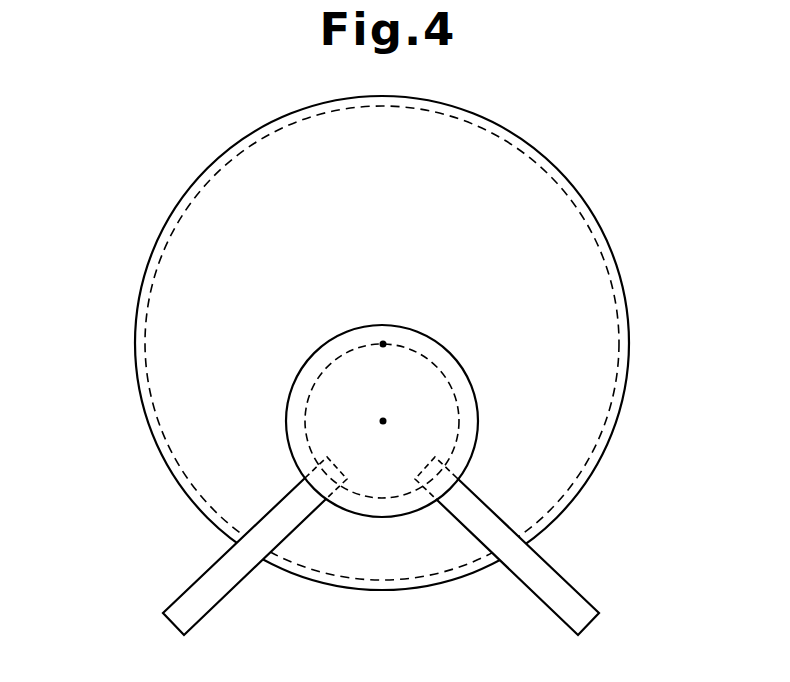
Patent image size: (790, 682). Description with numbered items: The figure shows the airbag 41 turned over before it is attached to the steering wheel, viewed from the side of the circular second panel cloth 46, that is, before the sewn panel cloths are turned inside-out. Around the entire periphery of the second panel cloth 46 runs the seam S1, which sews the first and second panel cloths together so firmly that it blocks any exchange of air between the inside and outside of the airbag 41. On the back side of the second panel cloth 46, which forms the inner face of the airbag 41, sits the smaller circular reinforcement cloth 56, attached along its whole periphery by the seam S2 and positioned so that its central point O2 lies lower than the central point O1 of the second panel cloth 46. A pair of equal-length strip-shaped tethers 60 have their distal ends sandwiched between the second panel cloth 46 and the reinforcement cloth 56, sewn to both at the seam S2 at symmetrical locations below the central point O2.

The airbag 41 is at (109, 231).
The second panel cloth 46 is at (601, 313).
The reinforcement cloth 56 is at (477, 411).
The tethers 60 is at (198, 582).
The seam S1 is at (566, 179).
The seam S2 is at (437, 358).
The central point of the second panel cloth O1 is at (384, 342).
The central point of the reinforcement cloth O2 is at (386, 420).